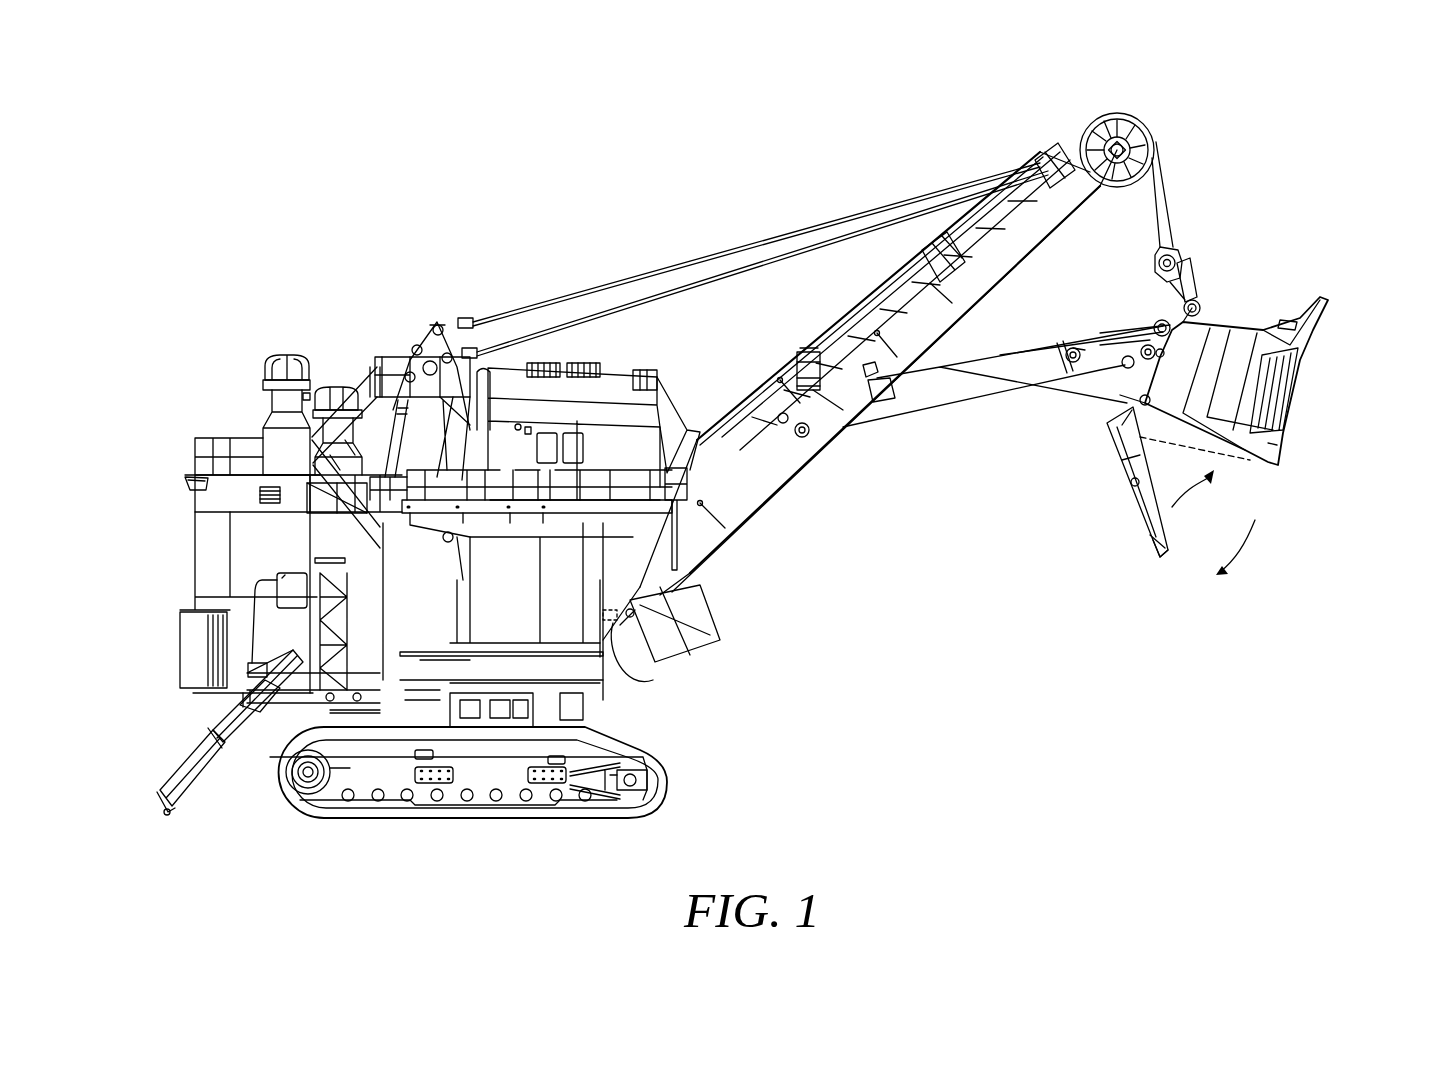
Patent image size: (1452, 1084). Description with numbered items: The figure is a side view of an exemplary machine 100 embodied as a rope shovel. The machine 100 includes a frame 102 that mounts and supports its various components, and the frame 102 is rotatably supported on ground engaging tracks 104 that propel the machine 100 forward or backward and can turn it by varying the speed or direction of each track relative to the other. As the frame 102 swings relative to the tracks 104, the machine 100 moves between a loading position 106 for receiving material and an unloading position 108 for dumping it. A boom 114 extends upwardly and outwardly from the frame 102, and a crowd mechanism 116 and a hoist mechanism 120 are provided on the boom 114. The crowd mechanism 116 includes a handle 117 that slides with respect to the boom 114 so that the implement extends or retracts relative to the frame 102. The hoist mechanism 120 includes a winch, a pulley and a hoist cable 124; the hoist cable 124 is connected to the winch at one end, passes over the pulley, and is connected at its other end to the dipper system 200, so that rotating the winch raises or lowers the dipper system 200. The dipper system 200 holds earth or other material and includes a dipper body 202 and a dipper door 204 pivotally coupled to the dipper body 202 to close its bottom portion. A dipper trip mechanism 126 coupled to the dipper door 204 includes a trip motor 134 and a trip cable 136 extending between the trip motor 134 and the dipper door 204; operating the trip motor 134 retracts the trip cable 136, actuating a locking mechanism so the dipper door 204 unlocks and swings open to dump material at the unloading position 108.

The machine 100 is at (240, 148).
The frame 102 is at (198, 665).
The tracks 104 is at (655, 758).
The loading position 106 is at (1262, 482).
The unloading position 108 is at (1137, 560).
The boom 114 is at (965, 285).
The crowd mechanism 116 is at (957, 420).
The handle 117 is at (978, 390).
The hoist mechanism 120 is at (1160, 118).
The hoist cable 124 is at (950, 197).
The dipper trip mechanism 126 is at (880, 392).
The trip motor 134 is at (640, 673).
The trip cable 136 is at (745, 495).
The dipper system 200 is at (1270, 275).
The dipper body 202 is at (1250, 366).
The dipper door 204 is at (1130, 462).